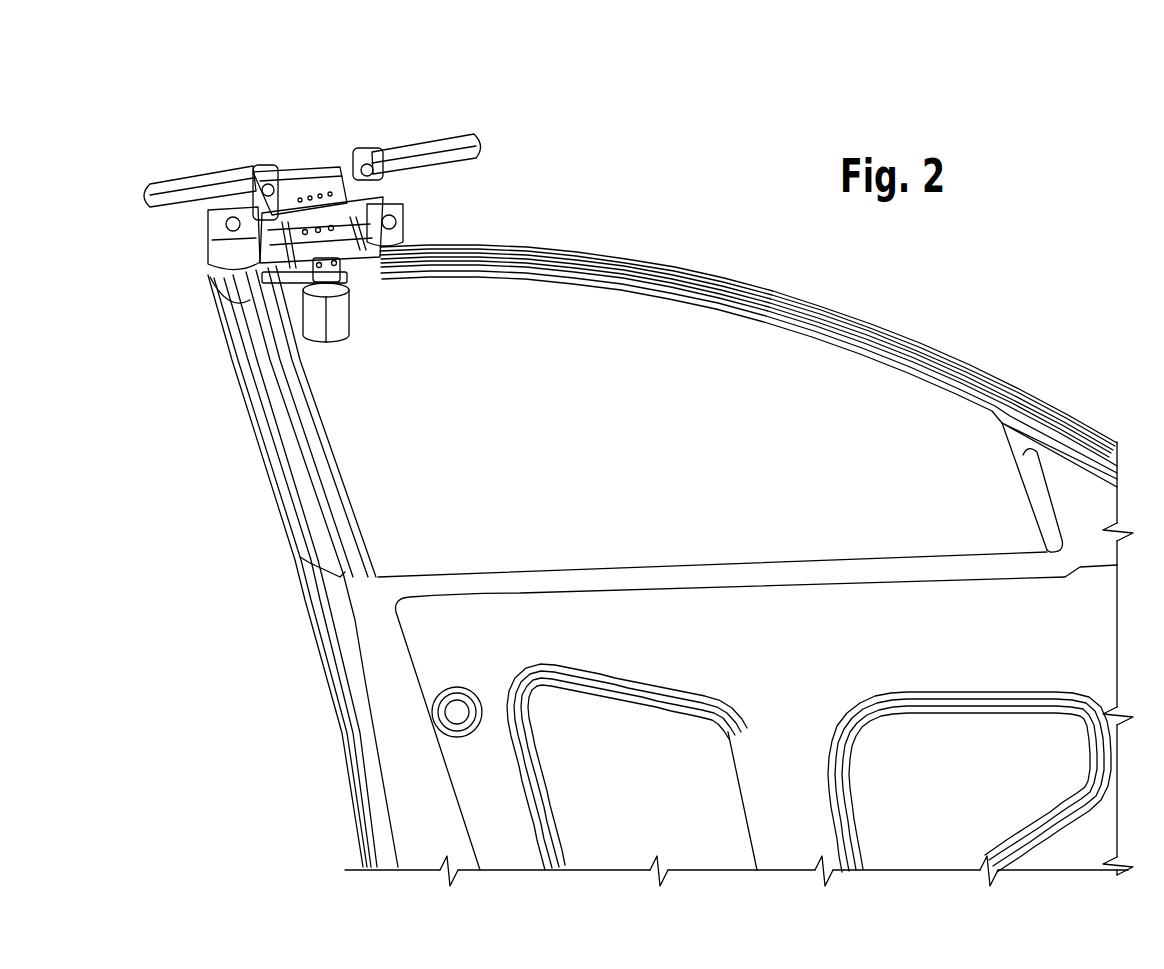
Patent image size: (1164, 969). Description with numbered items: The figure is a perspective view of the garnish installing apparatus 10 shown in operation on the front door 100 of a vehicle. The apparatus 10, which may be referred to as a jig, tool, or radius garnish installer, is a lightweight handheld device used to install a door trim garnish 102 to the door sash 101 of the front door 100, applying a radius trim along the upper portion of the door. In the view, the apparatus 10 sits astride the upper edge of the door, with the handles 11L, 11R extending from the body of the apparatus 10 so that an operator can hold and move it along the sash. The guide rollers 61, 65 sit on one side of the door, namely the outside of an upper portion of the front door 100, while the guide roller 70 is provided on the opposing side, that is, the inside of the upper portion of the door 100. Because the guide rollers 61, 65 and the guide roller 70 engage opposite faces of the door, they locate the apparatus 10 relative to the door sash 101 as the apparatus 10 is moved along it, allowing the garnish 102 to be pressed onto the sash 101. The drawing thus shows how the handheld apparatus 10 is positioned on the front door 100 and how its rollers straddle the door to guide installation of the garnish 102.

The garnish installing apparatus 10 is at (292, 153).
The left handle 11L is at (183, 190).
The right handle 11R is at (401, 152).
The guide roller 61 is at (210, 248).
The guide roller 65 is at (393, 233).
The guide roller 70 is at (338, 318).
The front door 100 is at (968, 357).
The door sash 101 is at (897, 330).
The door trim garnish 102 is at (662, 267).